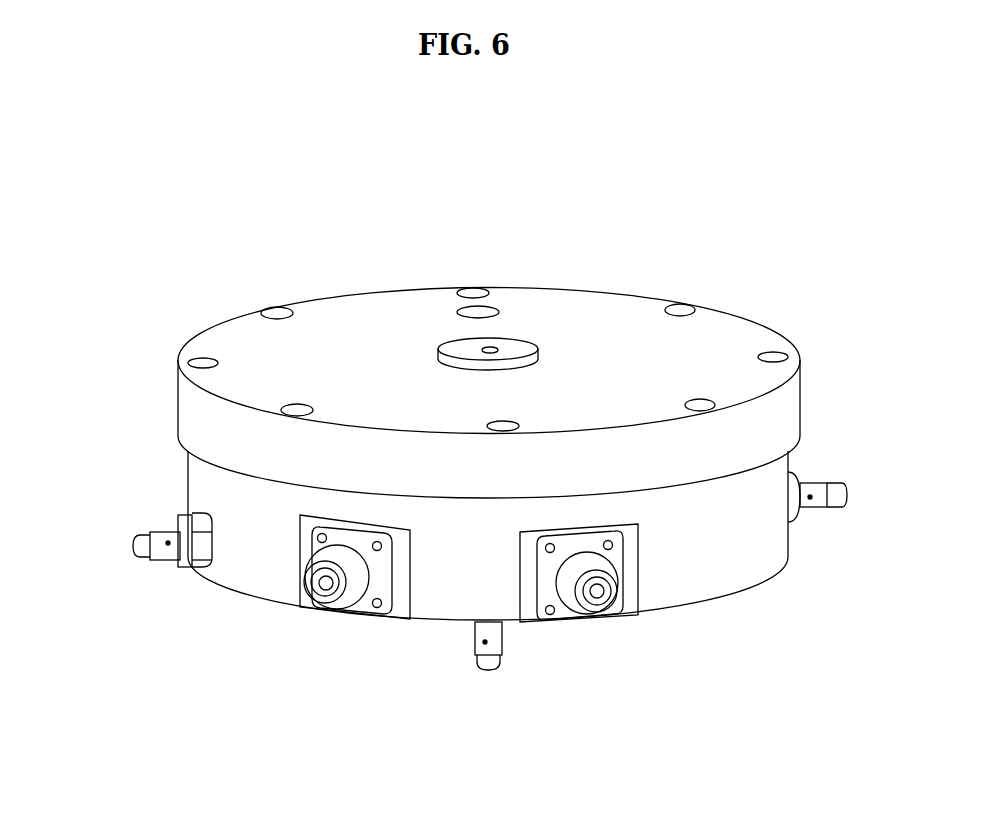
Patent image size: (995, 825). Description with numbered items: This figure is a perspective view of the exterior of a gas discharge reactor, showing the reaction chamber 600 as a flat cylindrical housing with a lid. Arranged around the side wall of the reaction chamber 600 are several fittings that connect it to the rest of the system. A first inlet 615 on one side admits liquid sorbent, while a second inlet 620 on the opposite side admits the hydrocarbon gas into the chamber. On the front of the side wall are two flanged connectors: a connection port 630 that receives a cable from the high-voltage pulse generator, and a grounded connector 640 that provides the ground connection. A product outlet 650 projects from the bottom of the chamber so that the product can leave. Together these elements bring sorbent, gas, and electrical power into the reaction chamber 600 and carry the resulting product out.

The reaction chamber 600 is at (489, 394).
The first inlet 615 is at (810, 497).
The second inlet 620 is at (134, 481).
The connection port 630 is at (620, 617).
The grounded connector 640 is at (310, 605).
The product outlet 650 is at (475, 658).